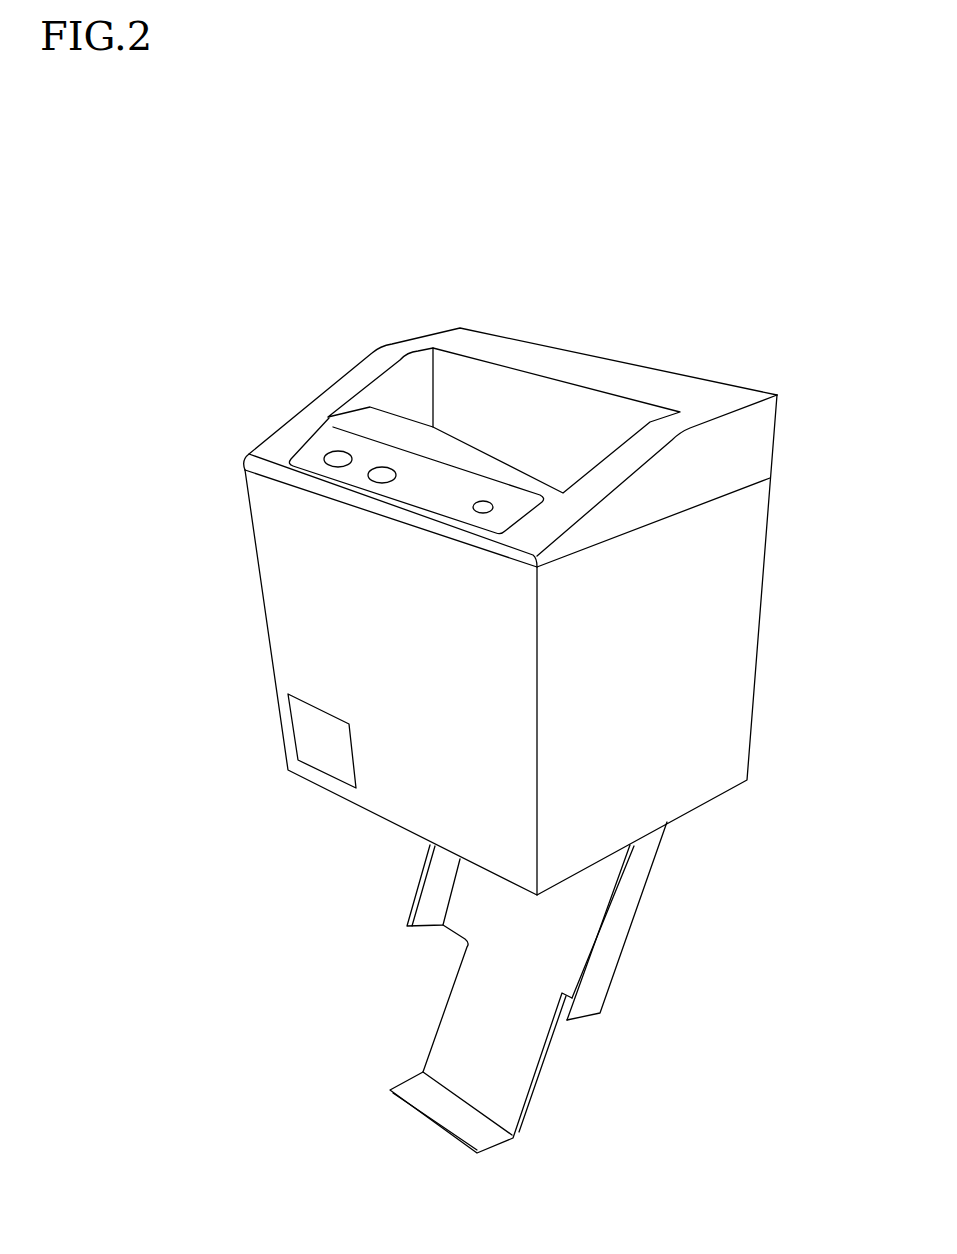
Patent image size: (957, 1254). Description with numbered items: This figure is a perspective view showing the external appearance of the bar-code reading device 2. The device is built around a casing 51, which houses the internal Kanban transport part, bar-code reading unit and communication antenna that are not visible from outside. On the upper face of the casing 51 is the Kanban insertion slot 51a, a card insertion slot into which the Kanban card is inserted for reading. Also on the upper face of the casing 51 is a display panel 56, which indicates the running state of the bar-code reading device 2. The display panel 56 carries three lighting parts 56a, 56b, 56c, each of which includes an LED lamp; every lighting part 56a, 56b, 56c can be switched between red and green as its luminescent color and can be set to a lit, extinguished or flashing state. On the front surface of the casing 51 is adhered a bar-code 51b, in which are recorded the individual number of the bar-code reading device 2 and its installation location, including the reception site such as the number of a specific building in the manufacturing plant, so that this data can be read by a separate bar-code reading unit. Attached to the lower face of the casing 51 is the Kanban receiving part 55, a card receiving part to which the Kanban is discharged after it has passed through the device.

The bar-code reading device 2 is at (238, 229).
The casing 51 is at (281, 570).
The Kanban insertion slot 51a is at (518, 420).
The bar-code 51b is at (322, 752).
The Kanban receiving part 55 is at (540, 1077).
The display panel 56 is at (428, 489).
The lighting part 56a is at (338, 455).
The lighting part 56b is at (383, 470).
The lighting part 56c is at (483, 512).